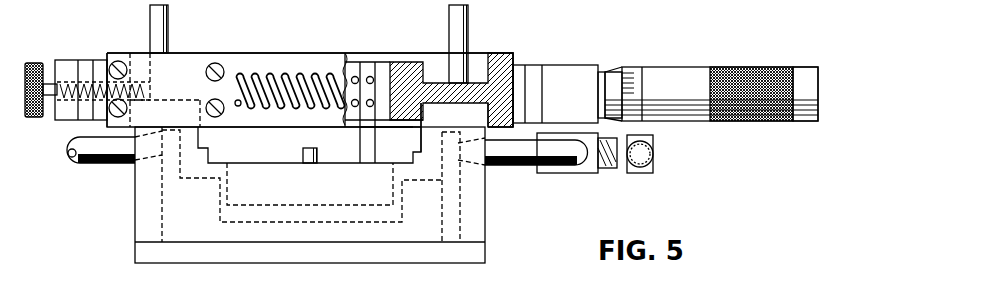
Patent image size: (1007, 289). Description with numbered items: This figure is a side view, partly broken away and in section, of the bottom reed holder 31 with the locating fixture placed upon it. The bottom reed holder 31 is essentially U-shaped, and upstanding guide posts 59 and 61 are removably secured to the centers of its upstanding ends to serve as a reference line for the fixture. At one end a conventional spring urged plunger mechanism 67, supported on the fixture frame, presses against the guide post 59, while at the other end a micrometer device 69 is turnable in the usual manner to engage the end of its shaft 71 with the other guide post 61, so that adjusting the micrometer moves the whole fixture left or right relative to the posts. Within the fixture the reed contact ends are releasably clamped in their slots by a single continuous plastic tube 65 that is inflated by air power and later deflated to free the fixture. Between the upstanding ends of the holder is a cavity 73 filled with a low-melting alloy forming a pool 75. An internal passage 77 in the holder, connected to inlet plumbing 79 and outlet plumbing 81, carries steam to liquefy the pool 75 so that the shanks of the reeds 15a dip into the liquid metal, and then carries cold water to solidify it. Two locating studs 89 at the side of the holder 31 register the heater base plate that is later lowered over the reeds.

The guide post 59 is at (168, 25).
The guide post 61 is at (468, 27).
The plastic tube 65 is at (358, 75).
The spring urged plunger mechanism 67 is at (379, 88).
The micrometer device 69 is at (670, 72).
The shaft 71 is at (426, 140).
The cavity 73 is at (393, 193).
The pool 75 is at (240, 173).
The internal passage 77 is at (170, 205).
The inlet plumbing 79 is at (70, 163).
The outlet plumbing 81 is at (573, 173).
The locating studs 89 is at (310, 158).
The shanks of the reeds 15a is at (360, 138).
The bottom reed holder 31 is at (488, 195).